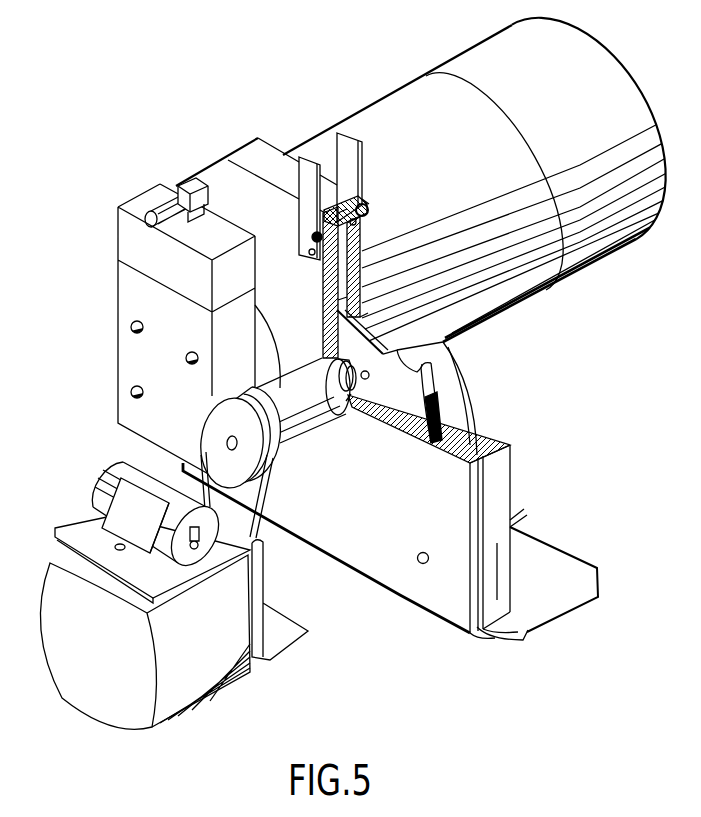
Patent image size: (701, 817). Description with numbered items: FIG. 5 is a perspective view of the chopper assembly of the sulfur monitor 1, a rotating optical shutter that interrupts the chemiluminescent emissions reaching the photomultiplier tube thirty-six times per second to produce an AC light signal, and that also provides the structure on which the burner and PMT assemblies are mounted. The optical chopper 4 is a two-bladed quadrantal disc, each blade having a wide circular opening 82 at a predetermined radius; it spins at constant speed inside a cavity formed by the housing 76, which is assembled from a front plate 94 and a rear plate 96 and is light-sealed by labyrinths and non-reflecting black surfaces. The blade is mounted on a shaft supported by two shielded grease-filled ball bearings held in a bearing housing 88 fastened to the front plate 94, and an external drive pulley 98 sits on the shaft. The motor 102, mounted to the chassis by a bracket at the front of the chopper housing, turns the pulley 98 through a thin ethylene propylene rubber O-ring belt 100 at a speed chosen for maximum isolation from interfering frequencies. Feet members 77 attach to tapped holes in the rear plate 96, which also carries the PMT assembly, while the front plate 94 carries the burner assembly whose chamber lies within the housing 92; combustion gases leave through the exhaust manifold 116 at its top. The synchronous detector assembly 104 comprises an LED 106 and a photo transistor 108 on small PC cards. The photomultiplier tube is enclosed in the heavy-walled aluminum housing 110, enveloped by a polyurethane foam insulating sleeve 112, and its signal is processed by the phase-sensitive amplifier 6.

The cylinder 1 is at (378, 107).
The optical chopper 4 is at (457, 393).
The phase-sensitive amplifier 6 is at (603, 68).
The housing 76 is at (499, 489).
The feet members 77 is at (545, 612).
The circular opening 82 is at (423, 368).
The bearing housing 88 is at (293, 367).
The housing 92 is at (125, 300).
The front plate 94 is at (477, 627).
The rear plate 96 is at (497, 543).
The drive pulley 98 is at (258, 465).
The O-ring belt 100 is at (268, 497).
The motor 102 is at (84, 654).
The synchronous detector assembly 104 is at (352, 260).
The LED 106 is at (361, 247).
The photo transistor 108 is at (325, 262).
The housing 110 is at (445, 55).
The insulating sleeve 112 is at (546, 294).
The exhaust manifold 116 is at (126, 218).